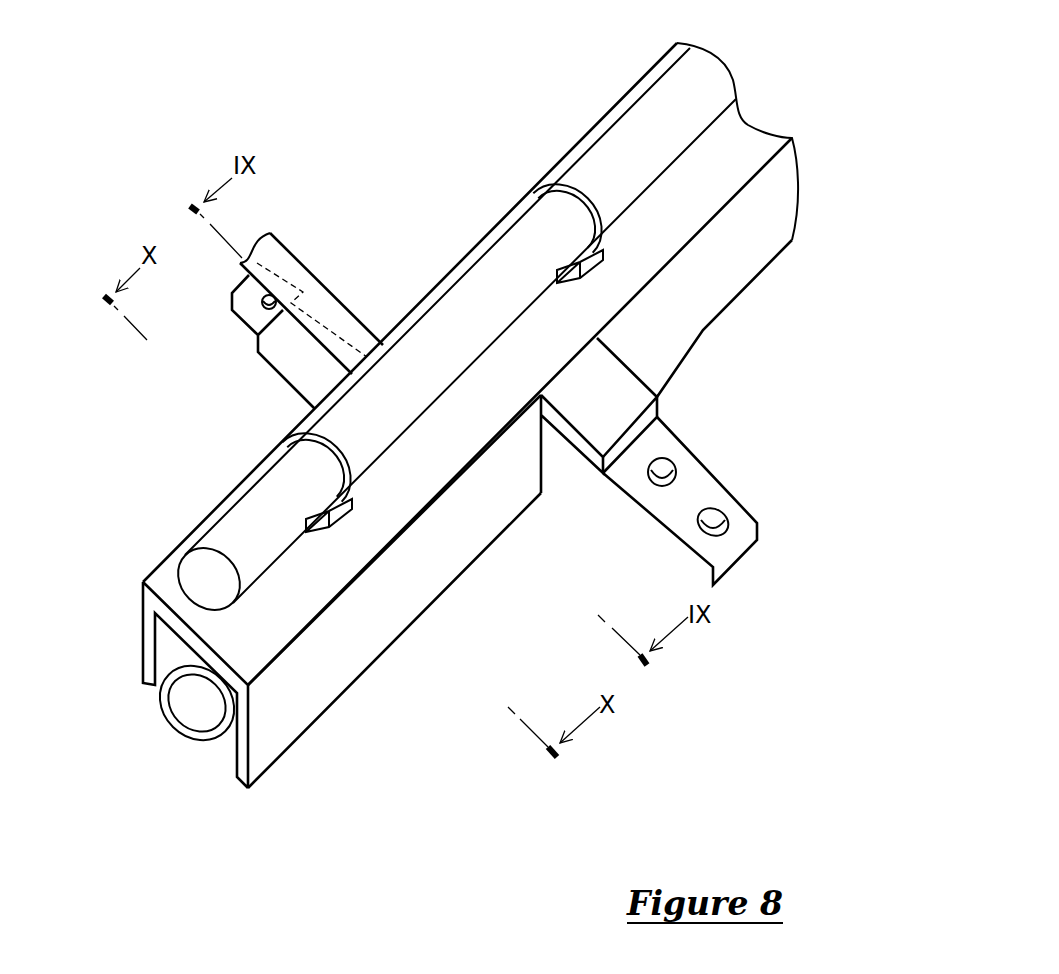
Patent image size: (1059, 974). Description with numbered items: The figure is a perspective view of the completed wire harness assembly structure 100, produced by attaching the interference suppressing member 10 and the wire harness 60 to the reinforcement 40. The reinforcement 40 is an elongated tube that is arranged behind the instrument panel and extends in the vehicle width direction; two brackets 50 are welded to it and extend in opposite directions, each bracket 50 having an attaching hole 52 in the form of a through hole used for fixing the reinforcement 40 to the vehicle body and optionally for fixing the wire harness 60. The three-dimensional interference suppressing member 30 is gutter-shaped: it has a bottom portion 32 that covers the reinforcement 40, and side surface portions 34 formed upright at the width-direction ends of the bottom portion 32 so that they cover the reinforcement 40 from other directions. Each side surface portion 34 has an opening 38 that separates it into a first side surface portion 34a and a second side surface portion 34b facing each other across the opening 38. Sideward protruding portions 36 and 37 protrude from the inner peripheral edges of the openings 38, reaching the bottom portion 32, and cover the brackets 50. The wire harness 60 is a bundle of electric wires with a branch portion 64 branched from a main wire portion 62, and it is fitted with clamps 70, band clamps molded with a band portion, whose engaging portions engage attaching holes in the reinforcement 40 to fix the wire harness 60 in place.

The wire harness assembly structure 100 is at (365, 77).
The interference suppressing member 10 is at (463, 430).
The three-dimensional interference suppressing member 30 is at (730, 168).
The bottom portion 32 is at (290, 625).
The side surface portions 34 is at (456, 529).
The first side surface portion 34a is at (440, 575).
The second side surface portion 34b is at (742, 272).
The sideward protruding portion 36 is at (640, 398).
The sideward protruding portion 37 is at (288, 352).
The opening 38 is at (565, 470).
The reinforcement 40 is at (207, 745).
The bracket 50 is at (736, 490).
The attaching hole 52 is at (668, 470).
The wire harness 60 is at (690, 90).
The main wire portion 62 is at (483, 267).
The branch portion 64 is at (325, 300).
The clamp 70 is at (596, 243).